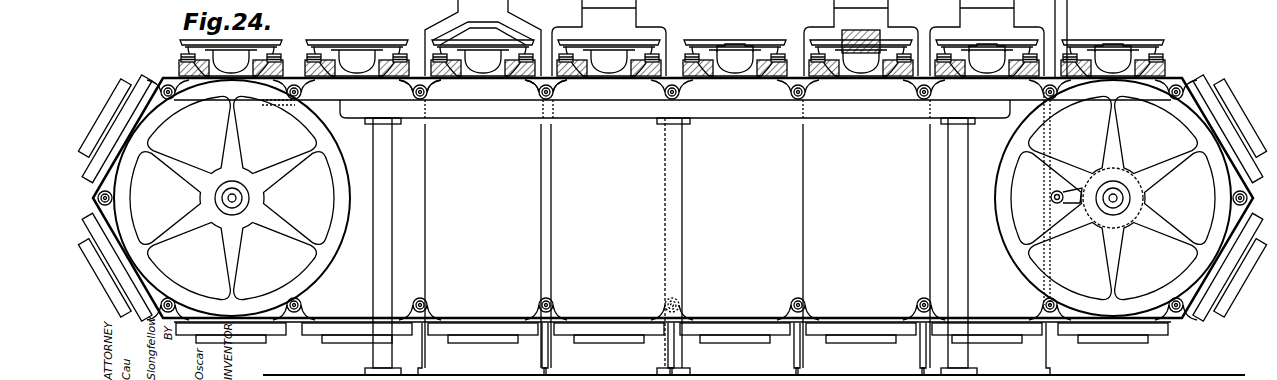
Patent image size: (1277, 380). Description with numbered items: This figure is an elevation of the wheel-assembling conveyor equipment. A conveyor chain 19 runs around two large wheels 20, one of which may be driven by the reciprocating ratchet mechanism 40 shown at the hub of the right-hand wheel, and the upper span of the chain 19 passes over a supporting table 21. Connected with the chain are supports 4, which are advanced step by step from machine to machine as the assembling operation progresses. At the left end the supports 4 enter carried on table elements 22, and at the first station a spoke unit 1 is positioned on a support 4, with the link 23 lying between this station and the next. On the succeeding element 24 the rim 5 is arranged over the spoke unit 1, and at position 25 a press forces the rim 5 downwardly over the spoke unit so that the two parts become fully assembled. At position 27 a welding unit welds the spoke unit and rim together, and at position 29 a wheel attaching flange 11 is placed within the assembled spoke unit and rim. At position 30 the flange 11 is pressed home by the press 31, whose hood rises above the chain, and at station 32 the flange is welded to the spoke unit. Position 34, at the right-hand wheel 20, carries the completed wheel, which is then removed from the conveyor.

The spoke unit 1 is at (190, 53).
The support 4 is at (182, 68).
The rim 5 is at (340, 23).
The wheel attaching flange 11 is at (721, 50).
The conveyor chain 19 is at (484, 84).
The wheels 20 is at (328, 246).
The supporting table 21 is at (630, 110).
The table elements 22 is at (140, 98).
The chain link 23 is at (264, 78).
The succeeding element 24 is at (392, 80).
The position 25 is at (520, 84).
The position 27 is at (643, 90).
The position 29 is at (770, 80).
The position 30 is at (896, 84).
The press 31 is at (833, 18).
The station 32 is at (1025, 84).
The position 34 is at (1143, 76).
The reciprocating ratchet mechanism 40 is at (1051, 197).